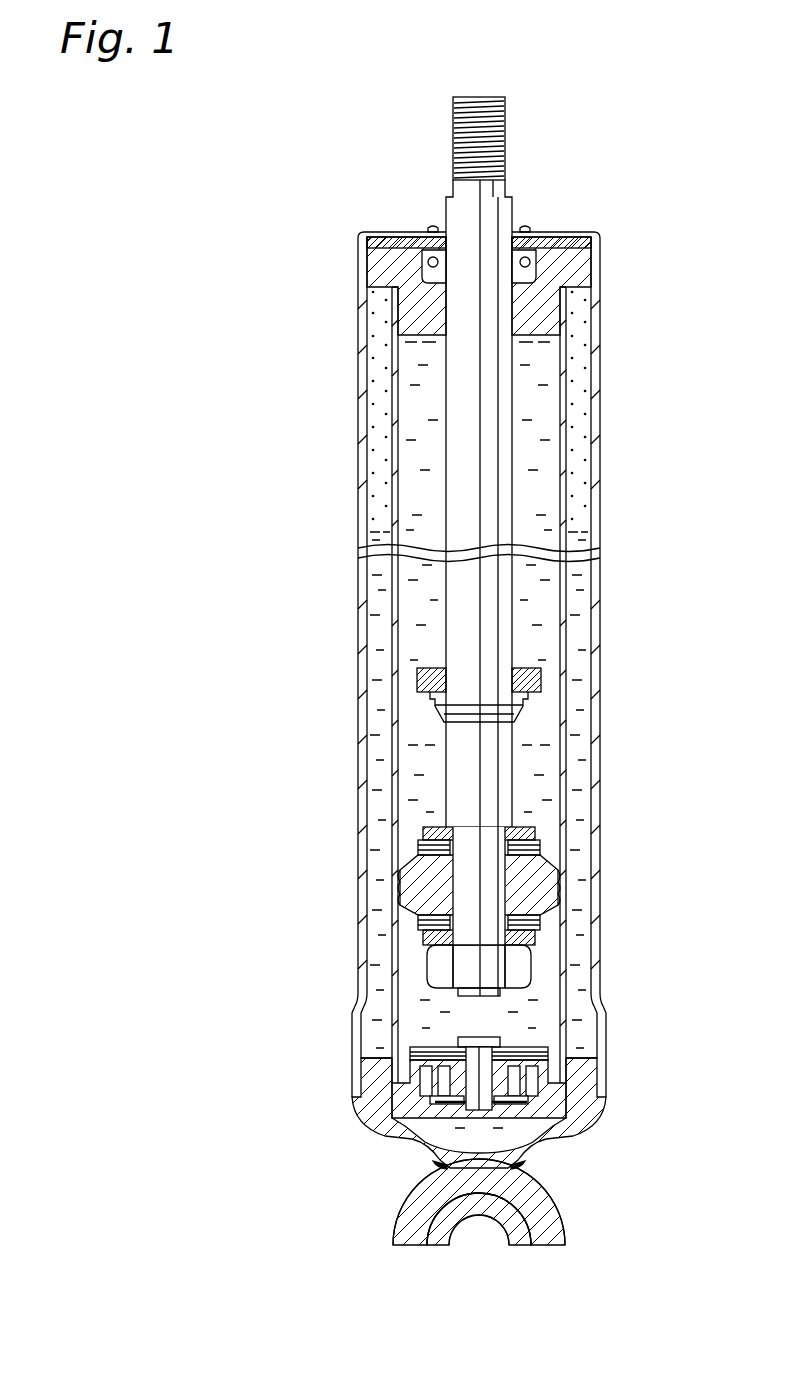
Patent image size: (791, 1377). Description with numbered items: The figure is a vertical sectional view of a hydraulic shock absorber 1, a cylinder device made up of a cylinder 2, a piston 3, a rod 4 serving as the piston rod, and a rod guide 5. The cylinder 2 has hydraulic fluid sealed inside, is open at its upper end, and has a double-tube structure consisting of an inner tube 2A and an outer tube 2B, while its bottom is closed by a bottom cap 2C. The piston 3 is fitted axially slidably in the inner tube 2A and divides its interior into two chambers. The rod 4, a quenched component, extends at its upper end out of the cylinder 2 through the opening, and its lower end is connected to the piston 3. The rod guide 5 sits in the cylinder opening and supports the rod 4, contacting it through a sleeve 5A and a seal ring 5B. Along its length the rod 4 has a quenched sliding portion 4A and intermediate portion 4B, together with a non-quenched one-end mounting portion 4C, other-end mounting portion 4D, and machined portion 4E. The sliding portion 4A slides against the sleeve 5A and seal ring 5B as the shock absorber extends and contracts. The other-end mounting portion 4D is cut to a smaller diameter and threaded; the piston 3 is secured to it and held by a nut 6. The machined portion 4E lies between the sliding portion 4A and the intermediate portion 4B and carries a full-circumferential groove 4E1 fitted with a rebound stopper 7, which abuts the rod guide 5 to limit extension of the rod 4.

The hydraulic shock absorber 1 is at (600, 428).
The cylinder 2 is at (362, 775).
The inner tube 2A is at (563, 752).
The outer tube 2B is at (362, 938).
The bottom cap 2C is at (545, 1146).
The piston 3 is at (550, 890).
The rod 4 is at (498, 490).
The sliding portion 4A is at (455, 424).
The intermediate portion 4B is at (505, 790).
The one-end mounting portion 4C is at (470, 137).
The other-end mounting portion 4D is at (465, 878).
The machined portion 4E is at (438, 705).
The full-circumferential groove 4E1 is at (507, 712).
The rod guide 5 is at (395, 311).
The sleeve 5A is at (520, 316).
The seal ring 5B is at (524, 248).
The nut 6 is at (527, 963).
The stopper 7 is at (541, 692).